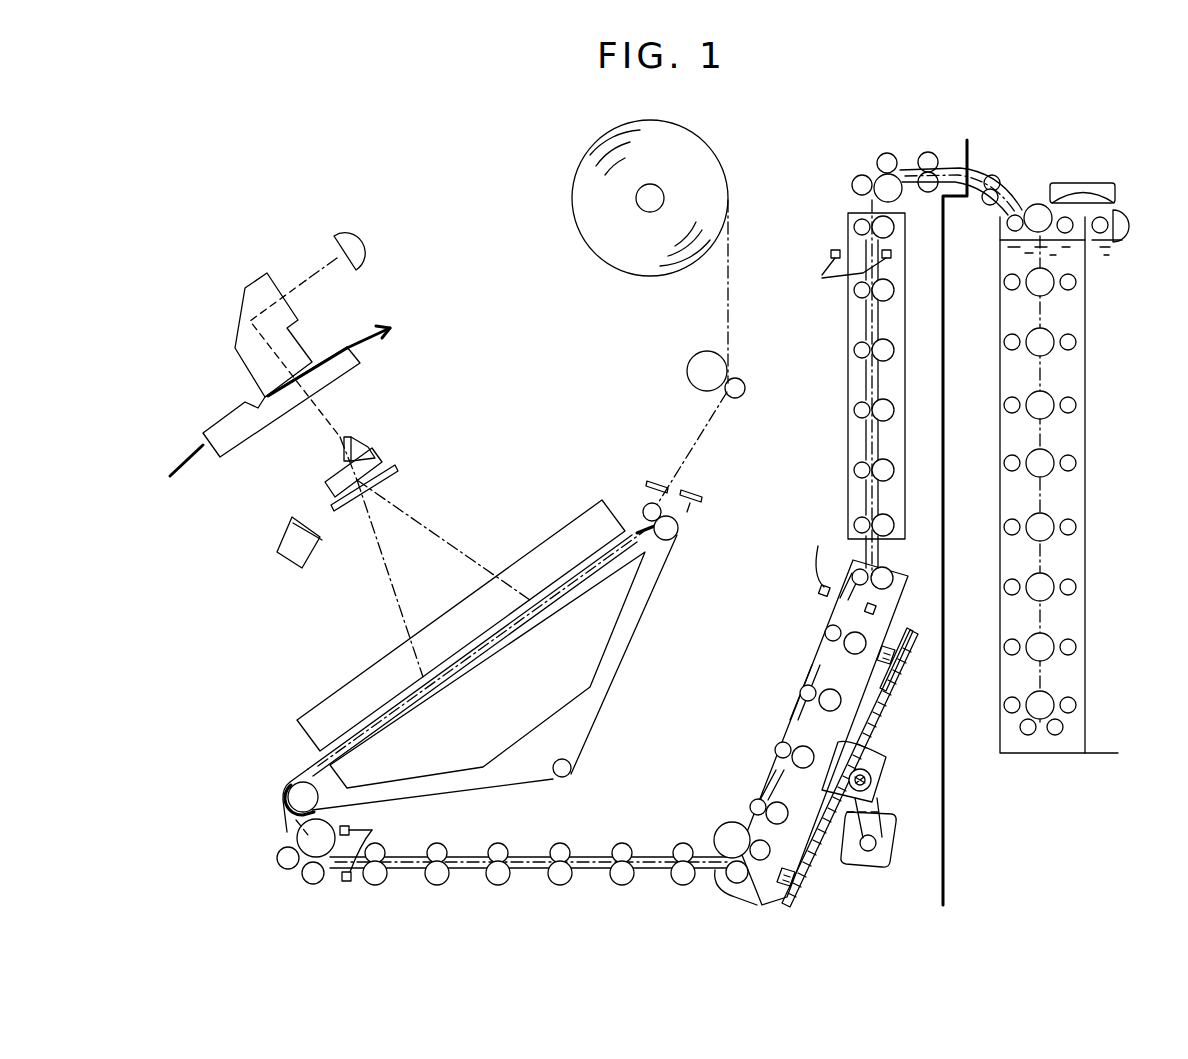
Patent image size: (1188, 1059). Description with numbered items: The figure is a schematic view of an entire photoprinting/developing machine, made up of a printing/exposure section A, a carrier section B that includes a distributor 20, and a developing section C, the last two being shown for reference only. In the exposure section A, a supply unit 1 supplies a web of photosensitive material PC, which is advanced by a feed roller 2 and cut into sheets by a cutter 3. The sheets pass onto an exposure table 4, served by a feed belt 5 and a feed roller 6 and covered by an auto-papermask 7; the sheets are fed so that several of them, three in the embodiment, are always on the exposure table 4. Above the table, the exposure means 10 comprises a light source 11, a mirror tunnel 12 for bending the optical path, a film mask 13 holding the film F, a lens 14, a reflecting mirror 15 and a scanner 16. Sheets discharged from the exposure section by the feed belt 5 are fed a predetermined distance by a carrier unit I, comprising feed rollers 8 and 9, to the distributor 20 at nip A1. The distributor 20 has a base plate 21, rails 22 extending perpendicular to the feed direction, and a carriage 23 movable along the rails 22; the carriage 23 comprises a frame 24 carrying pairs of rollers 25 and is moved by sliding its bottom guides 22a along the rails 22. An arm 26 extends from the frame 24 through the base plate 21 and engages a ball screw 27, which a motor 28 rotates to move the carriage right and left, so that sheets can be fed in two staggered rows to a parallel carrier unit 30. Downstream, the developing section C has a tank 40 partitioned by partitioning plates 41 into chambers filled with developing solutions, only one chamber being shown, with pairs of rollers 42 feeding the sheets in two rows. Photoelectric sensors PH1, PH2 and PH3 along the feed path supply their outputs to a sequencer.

The supply unit 1 is at (578, 240).
The photosensitive material PC is at (625, 255).
The feed roller 2 is at (690, 370).
The cutter 3 is at (660, 482).
The exposure table 4 is at (572, 690).
The feed belt 5 is at (640, 636).
The feed roller 6 is at (298, 790).
The auto-papermask 7 is at (345, 695).
The feed roller 8 is at (305, 840).
The feed rollers 9 is at (437, 868).
The exposure means 10 is at (218, 348).
The light source 11 is at (350, 242).
The mirror tunnel 12 is at (258, 290).
The film mask 13 is at (346, 356).
The lens 14 is at (372, 466).
The reflecting mirror 15 is at (350, 437).
The scanner 16 is at (285, 547).
The distributor 20 is at (808, 622).
The base plate 21 is at (880, 722).
The rails 22 is at (893, 660).
The bottom guides 22a is at (912, 642).
The carriage 23 is at (755, 792).
The frame 24 is at (778, 749).
The pairs of rollers 25 is at (772, 800).
The arm 26 is at (870, 769).
The ball screw 27 is at (871, 783).
The motor 28 is at (893, 847).
The parallel carrier unit 30 is at (840, 422).
The tank 40 is at (1135, 232).
The partitioning plates 41 is at (1088, 309).
The pairs of rollers 42 is at (1047, 343).
The printing/exposure section A is at (467, 222).
The carrier section B is at (790, 210).
The developing section C is at (1058, 178).
The film F is at (182, 468).
The carrier unit I is at (578, 846).
The nip point A1 is at (755, 808).
The photoelectric sensor PH1 is at (387, 846).
The photoelectric sensor PH2 is at (836, 565).
The photoelectric sensor PH3 is at (840, 278).